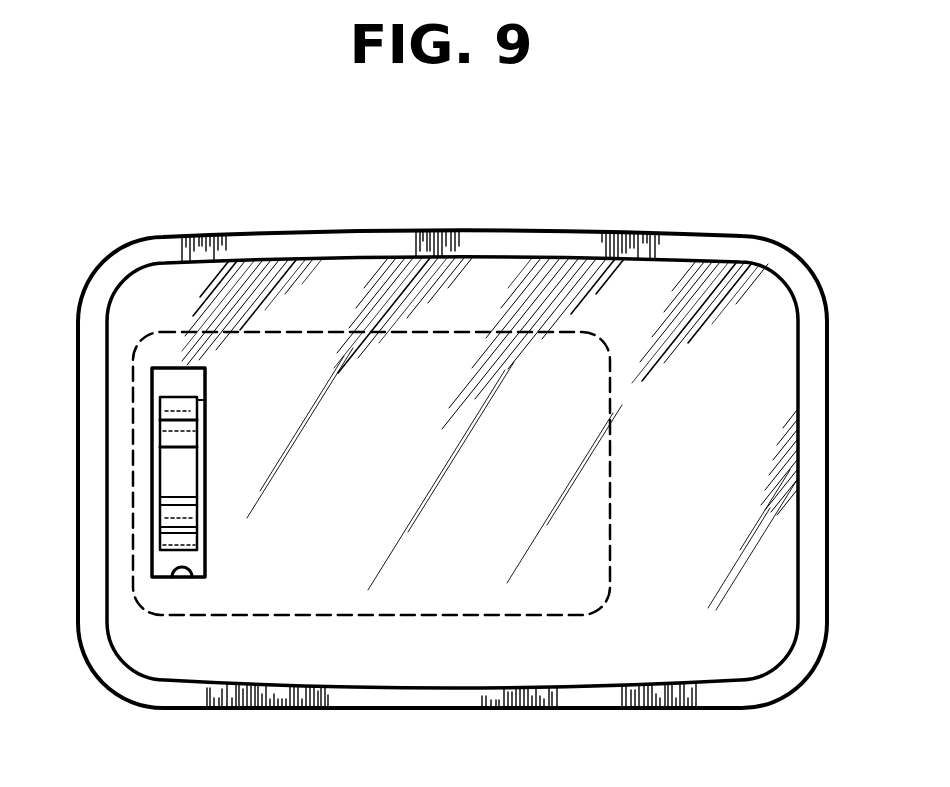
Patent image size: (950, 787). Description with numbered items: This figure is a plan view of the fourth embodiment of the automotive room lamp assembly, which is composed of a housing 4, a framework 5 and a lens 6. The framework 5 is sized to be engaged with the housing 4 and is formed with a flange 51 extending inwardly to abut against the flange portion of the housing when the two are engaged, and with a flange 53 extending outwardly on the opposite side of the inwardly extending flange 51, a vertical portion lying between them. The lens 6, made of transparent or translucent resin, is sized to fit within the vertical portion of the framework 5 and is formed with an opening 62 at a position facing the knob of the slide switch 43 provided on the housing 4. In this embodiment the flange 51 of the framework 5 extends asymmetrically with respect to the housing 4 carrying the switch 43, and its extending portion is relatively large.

The housing 4 is at (316, 322).
The framework 5 is at (500, 226).
The lens 6 is at (475, 641).
The slide switch 43 is at (171, 462).
The flange 51 is at (777, 523).
The flange 53 is at (672, 248).
The opening 62 is at (176, 578).